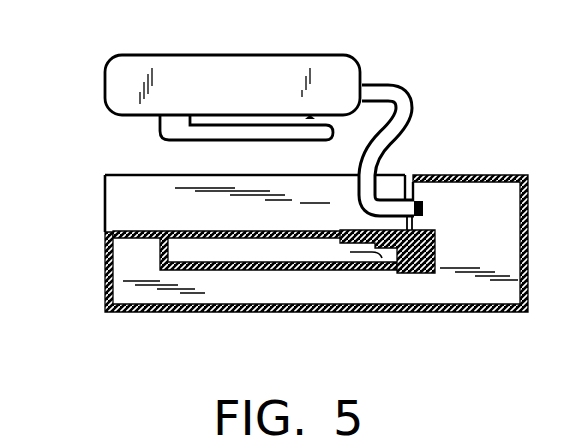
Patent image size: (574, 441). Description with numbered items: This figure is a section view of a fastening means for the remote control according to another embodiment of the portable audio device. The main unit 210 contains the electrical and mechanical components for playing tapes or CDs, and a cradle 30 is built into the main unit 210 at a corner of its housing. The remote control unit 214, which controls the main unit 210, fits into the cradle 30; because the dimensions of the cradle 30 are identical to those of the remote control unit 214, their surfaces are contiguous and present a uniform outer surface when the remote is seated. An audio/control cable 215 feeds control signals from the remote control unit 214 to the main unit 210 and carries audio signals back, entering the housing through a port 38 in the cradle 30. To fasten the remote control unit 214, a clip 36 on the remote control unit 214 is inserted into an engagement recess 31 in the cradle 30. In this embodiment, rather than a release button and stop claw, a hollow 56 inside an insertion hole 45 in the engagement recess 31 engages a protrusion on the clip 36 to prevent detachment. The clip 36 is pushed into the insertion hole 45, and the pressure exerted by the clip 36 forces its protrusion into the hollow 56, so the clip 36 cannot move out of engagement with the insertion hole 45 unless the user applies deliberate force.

The main unit 210 is at (104, 288).
The cradle 30 is at (118, 203).
The engagement recess 31 is at (237, 247).
The clip 36 is at (171, 139).
The port 38 is at (408, 176).
The insertion hole 45 is at (362, 256).
The hollow 56 is at (436, 233).
The remote control unit 214 is at (297, 65).
The audio/control cable 215 is at (408, 101).